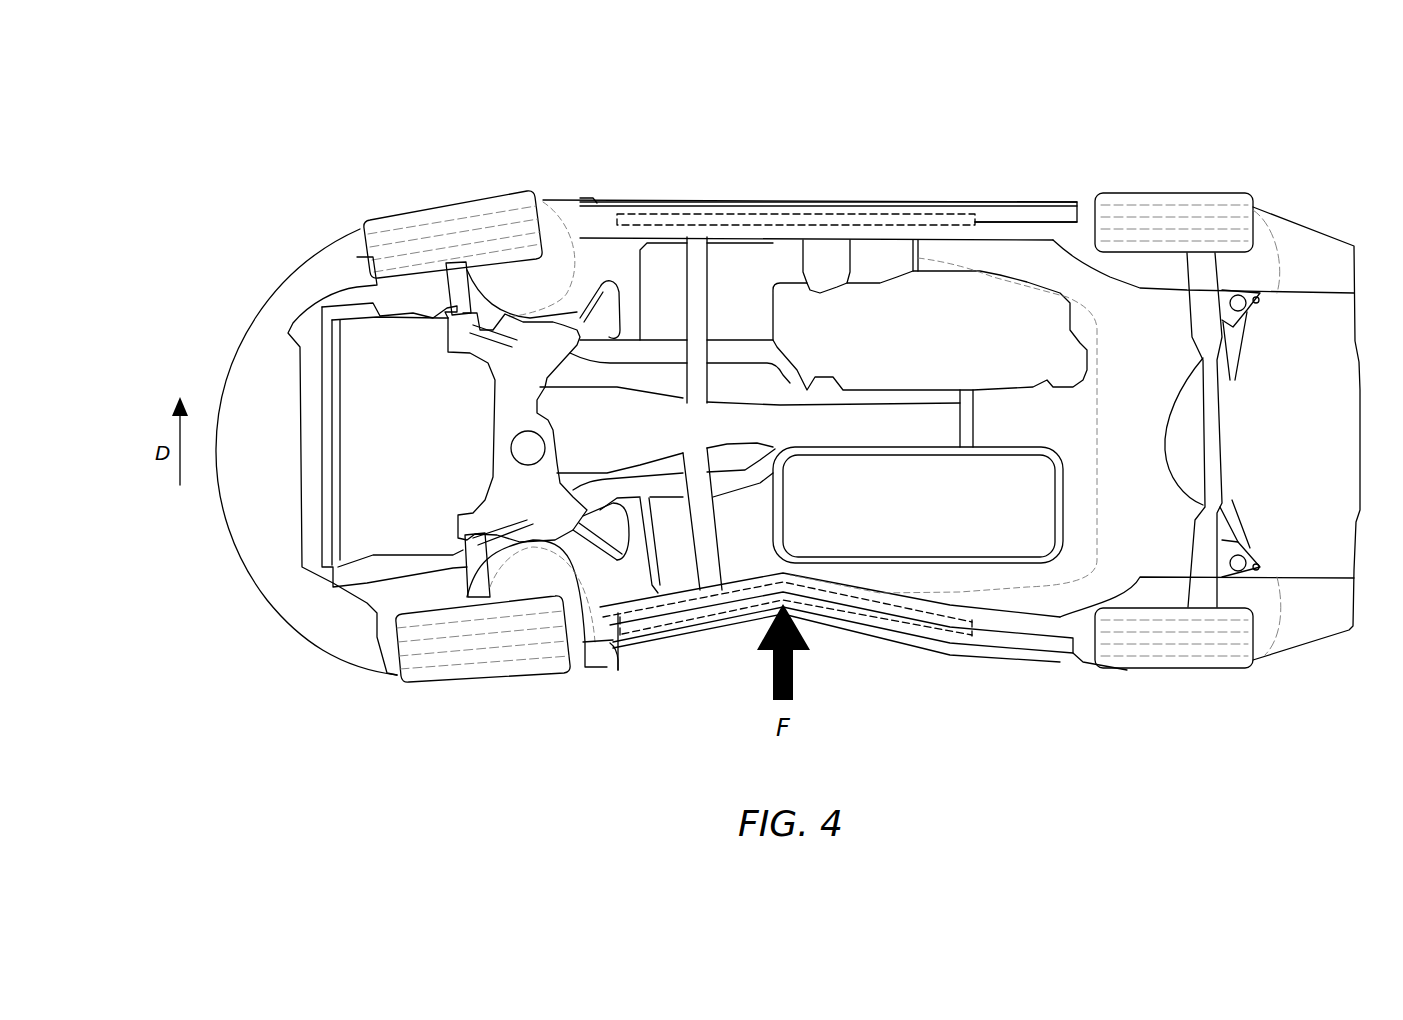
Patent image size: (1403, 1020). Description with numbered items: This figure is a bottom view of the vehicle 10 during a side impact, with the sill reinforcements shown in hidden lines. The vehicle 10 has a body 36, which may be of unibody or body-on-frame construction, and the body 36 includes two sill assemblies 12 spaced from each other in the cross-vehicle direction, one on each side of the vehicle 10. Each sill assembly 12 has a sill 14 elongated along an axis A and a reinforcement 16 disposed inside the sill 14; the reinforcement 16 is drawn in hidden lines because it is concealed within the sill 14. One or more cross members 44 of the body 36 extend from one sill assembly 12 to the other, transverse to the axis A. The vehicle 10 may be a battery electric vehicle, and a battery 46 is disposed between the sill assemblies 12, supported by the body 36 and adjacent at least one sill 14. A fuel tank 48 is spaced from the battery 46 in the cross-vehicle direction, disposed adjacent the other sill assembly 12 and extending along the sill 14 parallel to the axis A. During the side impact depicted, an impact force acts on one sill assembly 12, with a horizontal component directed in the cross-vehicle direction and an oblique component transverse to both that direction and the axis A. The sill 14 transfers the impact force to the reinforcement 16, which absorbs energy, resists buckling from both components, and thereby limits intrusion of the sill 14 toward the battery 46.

The vehicle 10 is at (1278, 140).
The sill assembly 12 is at (600, 180).
The sill 14 is at (850, 200).
The reinforcement 16 is at (978, 218).
The body 36 is at (297, 267).
The cross member 44 is at (715, 277).
The battery 46 is at (1066, 510).
The fuel tank 48 is at (1088, 368).
The axis A is at (1013, 221).